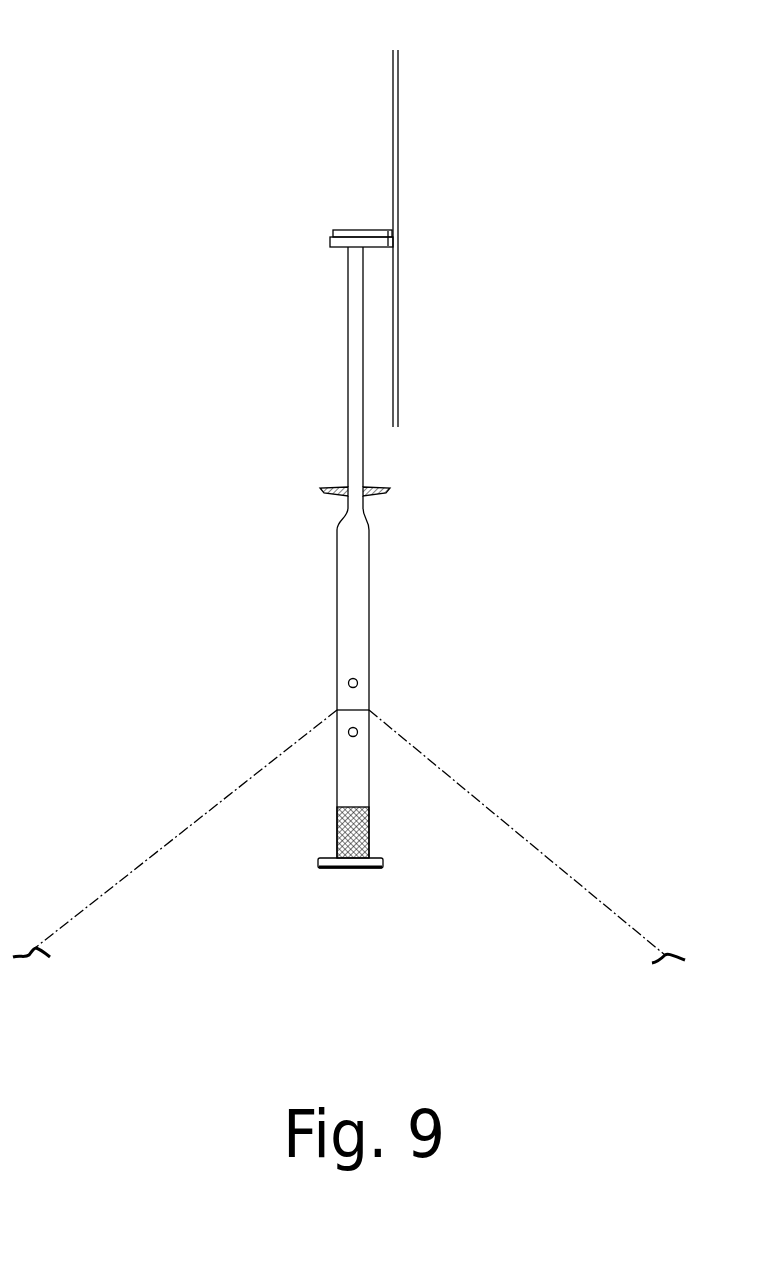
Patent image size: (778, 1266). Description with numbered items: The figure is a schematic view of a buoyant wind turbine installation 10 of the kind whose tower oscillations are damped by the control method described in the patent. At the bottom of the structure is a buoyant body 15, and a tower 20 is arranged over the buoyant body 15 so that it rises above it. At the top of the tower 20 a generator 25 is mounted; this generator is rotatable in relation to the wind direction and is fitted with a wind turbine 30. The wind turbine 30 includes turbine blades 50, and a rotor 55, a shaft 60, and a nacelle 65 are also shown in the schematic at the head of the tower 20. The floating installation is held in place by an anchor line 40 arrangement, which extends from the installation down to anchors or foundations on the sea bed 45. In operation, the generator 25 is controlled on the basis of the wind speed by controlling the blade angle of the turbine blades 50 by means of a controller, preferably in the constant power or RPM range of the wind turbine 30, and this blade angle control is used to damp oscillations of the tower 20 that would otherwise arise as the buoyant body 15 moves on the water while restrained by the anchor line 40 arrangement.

The wind turbine installation 10 is at (243, 108).
The buoyant body 15 is at (335, 598).
The tower 20 is at (347, 377).
The generator 25 is at (340, 230).
The wind turbine 30 is at (401, 130).
The anchor line 40 is at (532, 842).
The sea bed 45 is at (677, 948).
The turbine blades 50 is at (400, 87).
The rotor 55 is at (400, 228).
The shaft 60 is at (387, 228).
The nacelle 65 is at (362, 228).